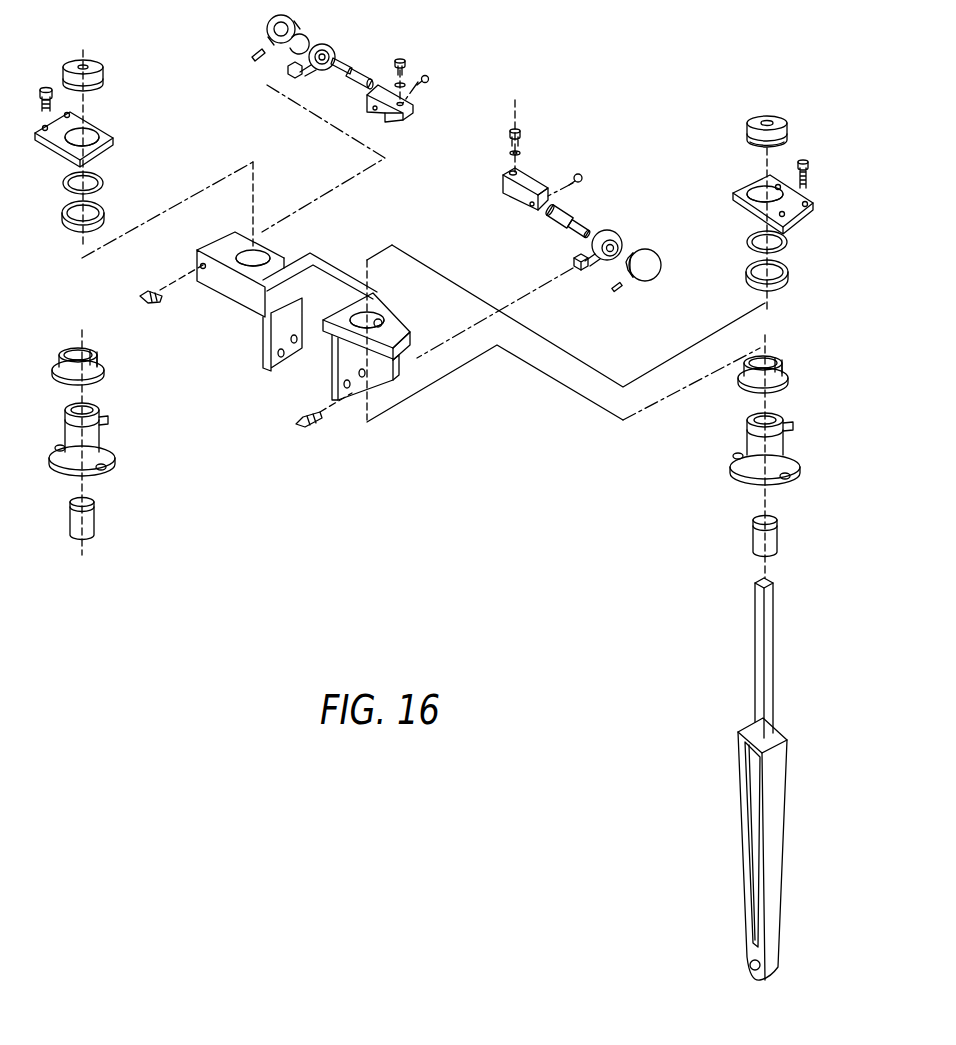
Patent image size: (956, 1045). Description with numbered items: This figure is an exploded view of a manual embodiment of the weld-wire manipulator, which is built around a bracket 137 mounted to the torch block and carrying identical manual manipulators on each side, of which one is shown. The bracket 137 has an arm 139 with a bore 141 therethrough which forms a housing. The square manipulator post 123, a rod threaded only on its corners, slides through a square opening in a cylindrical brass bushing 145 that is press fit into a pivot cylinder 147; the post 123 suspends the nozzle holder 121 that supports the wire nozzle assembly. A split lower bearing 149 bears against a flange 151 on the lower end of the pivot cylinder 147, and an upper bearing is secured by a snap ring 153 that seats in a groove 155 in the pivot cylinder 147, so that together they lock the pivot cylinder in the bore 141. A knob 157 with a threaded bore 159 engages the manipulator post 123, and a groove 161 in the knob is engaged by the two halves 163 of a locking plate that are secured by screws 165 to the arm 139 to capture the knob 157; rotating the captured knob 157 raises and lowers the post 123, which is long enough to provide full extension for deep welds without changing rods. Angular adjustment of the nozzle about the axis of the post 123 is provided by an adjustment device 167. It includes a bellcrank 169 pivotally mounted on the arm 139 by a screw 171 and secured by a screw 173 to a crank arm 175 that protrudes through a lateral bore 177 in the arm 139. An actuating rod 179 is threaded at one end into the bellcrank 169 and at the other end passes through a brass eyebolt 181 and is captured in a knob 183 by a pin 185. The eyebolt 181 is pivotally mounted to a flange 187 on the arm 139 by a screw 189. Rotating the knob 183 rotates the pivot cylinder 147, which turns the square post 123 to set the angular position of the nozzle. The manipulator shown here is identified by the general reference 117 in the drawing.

The shaft assembly 117 is at (717, 546).
The nozzle holder 121 is at (777, 838).
The manipulator post 123 is at (767, 687).
The bracket 137 is at (243, 387).
The arm 139 is at (328, 338).
The bore 141 is at (362, 317).
The cylindrical brass bushing 145 is at (768, 538).
The pivot cylinder 147 is at (710, 468).
The split lower bearing 149 is at (785, 362).
The flange 151 is at (785, 290).
The snap ring 153 is at (785, 252).
The groove 155 is at (767, 440).
The knob 157 is at (778, 112).
The threaded bore 159 is at (762, 115).
The groove 161 is at (755, 145).
The locking plate halves 163 is at (757, 214).
The screws 165 is at (808, 170).
The adjustment device 167 is at (617, 167).
The bellcrank 169 is at (527, 200).
The screw 171 is at (575, 177).
The screw 173 is at (514, 127).
The crank arm 175 is at (786, 427).
The lateral bore 177 is at (379, 320).
The actuating rod 179 is at (560, 223).
The brass eyebolt 181 is at (603, 232).
The knob 183 is at (652, 274).
The pin 185 is at (622, 293).
The flange 187 is at (398, 370).
The screw 189 is at (308, 428).